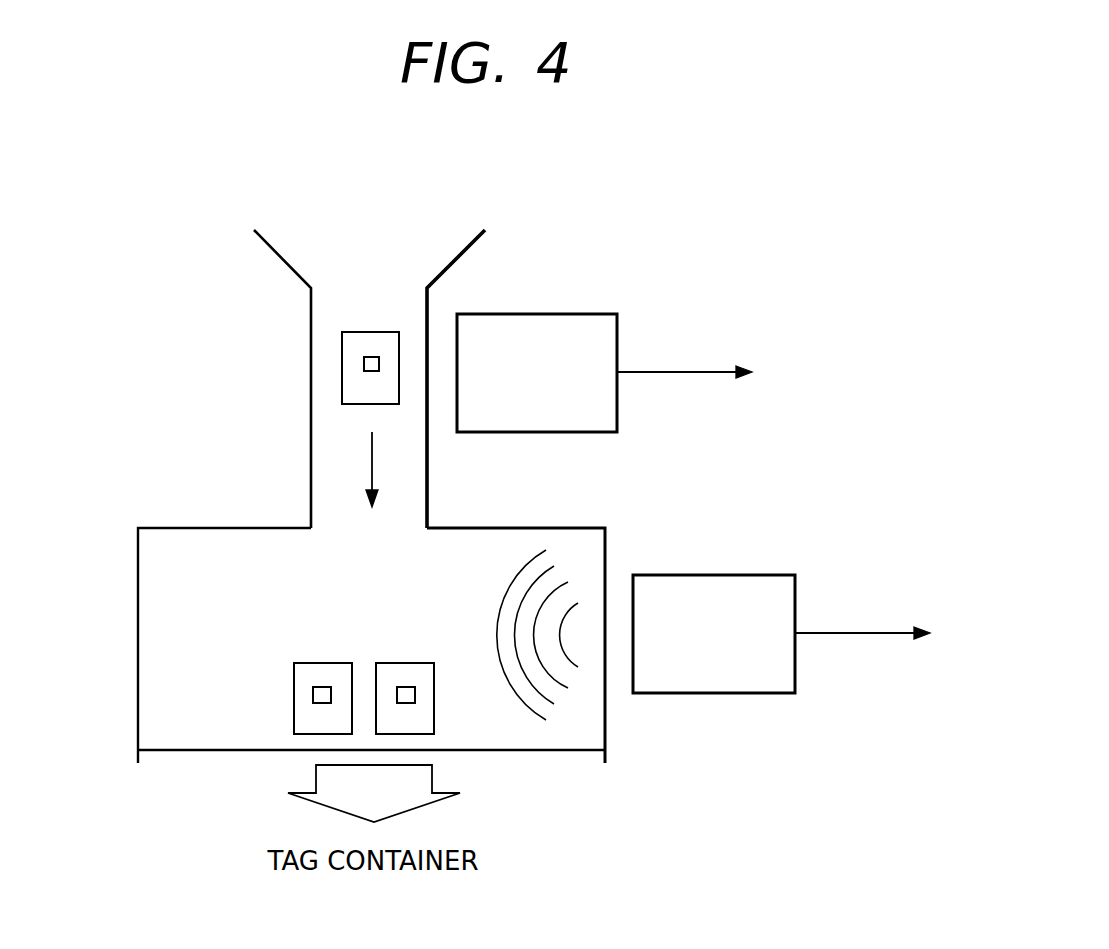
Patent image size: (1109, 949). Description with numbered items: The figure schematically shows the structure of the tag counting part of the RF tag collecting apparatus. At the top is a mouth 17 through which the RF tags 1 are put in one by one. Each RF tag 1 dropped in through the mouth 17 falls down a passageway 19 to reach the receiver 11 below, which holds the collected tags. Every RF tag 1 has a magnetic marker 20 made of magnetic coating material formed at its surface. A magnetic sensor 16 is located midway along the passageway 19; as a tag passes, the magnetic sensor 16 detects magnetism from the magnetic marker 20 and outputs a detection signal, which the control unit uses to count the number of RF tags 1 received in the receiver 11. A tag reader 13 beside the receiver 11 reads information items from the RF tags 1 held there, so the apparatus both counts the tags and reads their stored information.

The RF tag 1 is at (342, 352).
The receiver 11 is at (138, 640).
The tag reader 13 is at (743, 575).
The magnetic sensor 16 is at (577, 314).
The mouth 17 is at (389, 248).
The passageway 19 is at (398, 492).
The magnetic marker 20 is at (364, 366).